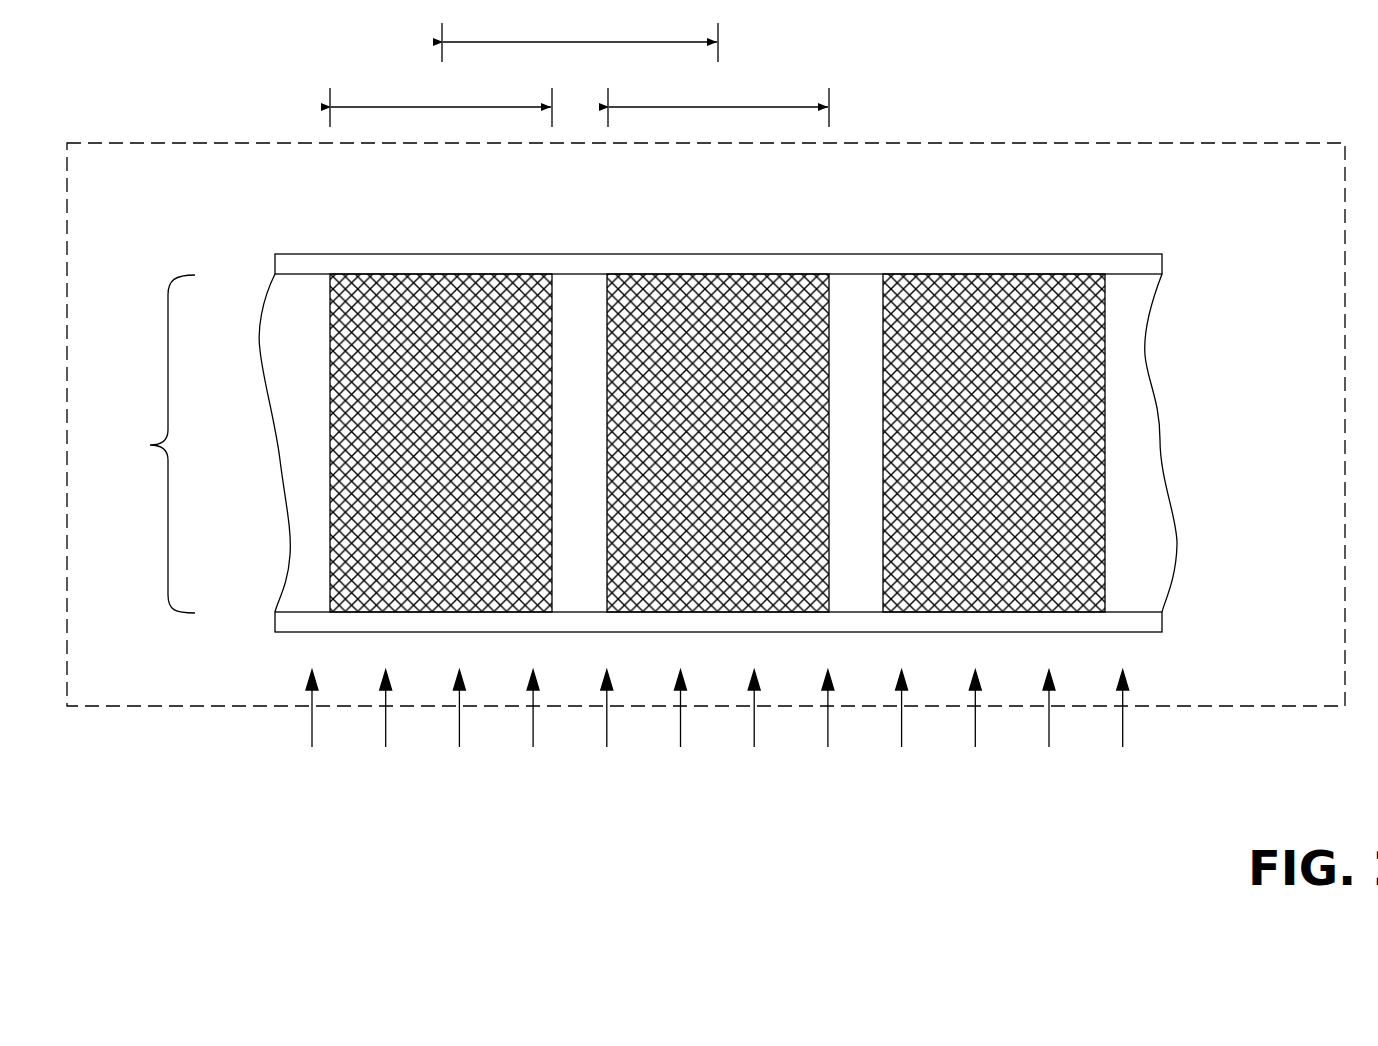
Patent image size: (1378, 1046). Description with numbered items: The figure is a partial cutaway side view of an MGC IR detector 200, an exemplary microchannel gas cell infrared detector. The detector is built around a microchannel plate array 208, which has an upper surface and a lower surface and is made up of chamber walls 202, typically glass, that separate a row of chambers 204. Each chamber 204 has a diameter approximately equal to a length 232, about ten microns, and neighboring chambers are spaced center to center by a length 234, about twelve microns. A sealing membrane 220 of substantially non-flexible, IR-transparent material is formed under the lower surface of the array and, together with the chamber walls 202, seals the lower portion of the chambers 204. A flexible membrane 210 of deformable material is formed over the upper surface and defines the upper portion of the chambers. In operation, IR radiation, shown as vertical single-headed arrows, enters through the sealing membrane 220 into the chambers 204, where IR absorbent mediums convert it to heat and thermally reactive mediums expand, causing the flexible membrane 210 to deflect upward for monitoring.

The MGC IR detector 200 is at (160, 213).
The chamber walls 202 is at (289, 368).
The chambers 204 is at (438, 397).
The microchannel plate array 208 is at (153, 444).
The flexible membrane 210 is at (1145, 263).
The sealing membrane 220 is at (1133, 623).
The length 232 is at (442, 107).
The length 234 is at (579, 42).